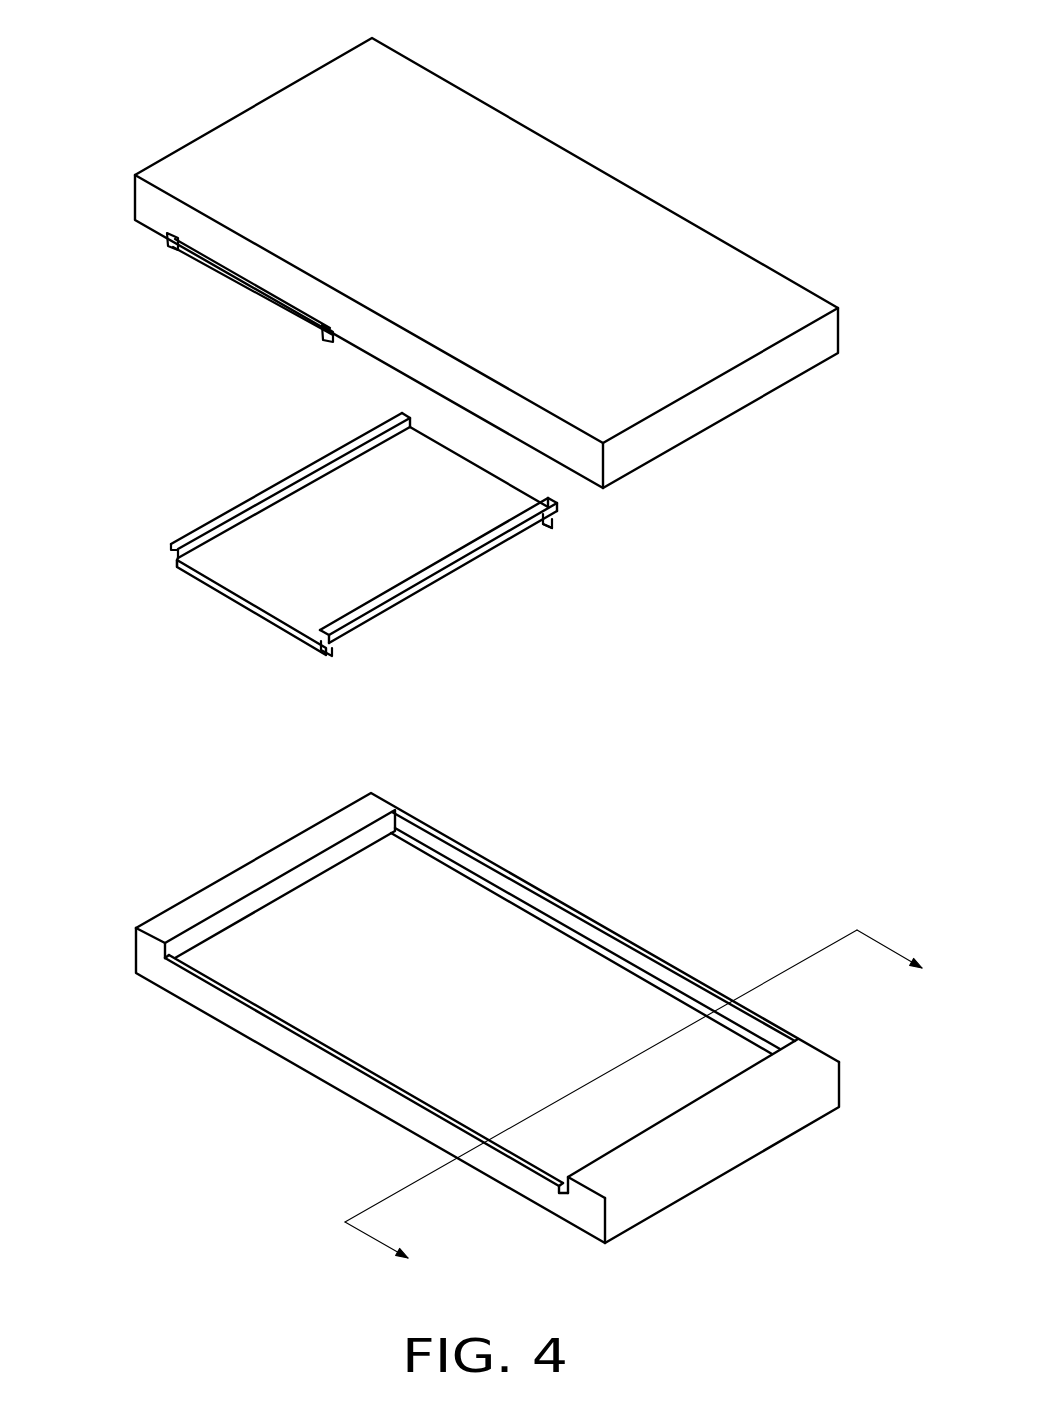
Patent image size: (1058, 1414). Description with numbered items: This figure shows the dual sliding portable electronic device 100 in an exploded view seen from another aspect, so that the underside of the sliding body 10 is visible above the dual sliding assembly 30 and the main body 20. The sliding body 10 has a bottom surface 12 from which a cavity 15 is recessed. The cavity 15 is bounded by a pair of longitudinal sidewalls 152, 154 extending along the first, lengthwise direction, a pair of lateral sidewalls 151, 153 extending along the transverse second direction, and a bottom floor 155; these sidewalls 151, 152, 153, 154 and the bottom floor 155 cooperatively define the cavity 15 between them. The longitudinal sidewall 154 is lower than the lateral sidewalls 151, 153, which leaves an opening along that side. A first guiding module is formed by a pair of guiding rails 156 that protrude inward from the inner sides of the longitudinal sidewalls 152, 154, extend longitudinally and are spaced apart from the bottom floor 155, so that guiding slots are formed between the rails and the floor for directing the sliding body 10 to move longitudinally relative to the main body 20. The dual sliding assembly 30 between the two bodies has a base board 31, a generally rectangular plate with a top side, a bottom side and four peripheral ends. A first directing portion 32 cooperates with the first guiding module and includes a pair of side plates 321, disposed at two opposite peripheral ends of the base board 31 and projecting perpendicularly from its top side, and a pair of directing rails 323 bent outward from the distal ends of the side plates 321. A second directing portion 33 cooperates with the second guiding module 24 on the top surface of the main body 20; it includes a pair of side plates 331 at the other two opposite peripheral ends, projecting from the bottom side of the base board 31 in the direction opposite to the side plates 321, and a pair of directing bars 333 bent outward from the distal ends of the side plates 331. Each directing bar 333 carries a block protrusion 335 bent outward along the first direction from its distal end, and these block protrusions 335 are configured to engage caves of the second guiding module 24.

The dual sliding portable electronic device 100 is at (500, 36).
The main body 20 is at (546, 134).
The second guiding module 24 is at (225, 270).
The dual sliding assembly 30 is at (232, 612).
The base board 31 is at (317, 517).
The first directing portion 32 is at (644, 527).
The second directing portion 33 is at (84, 513).
The side plates 321 is at (547, 533).
The directing rails 323 is at (548, 527).
The side plates 331 is at (177, 562).
The directing bars 333 is at (175, 543).
The block protrusion 335 is at (328, 633).
The sliding body 10 is at (757, 1162).
The bottom surface 12 is at (805, 1062).
The cavity 15 is at (470, 923).
The lateral sidewall 151 is at (352, 847).
The longitudinal sidewall 152 is at (445, 850).
The lateral sidewall 153 is at (558, 1184).
The longitudinal sidewall 154 is at (220, 1008).
The bottom floor 155 is at (292, 925).
The guiding rails 156 is at (582, 940).